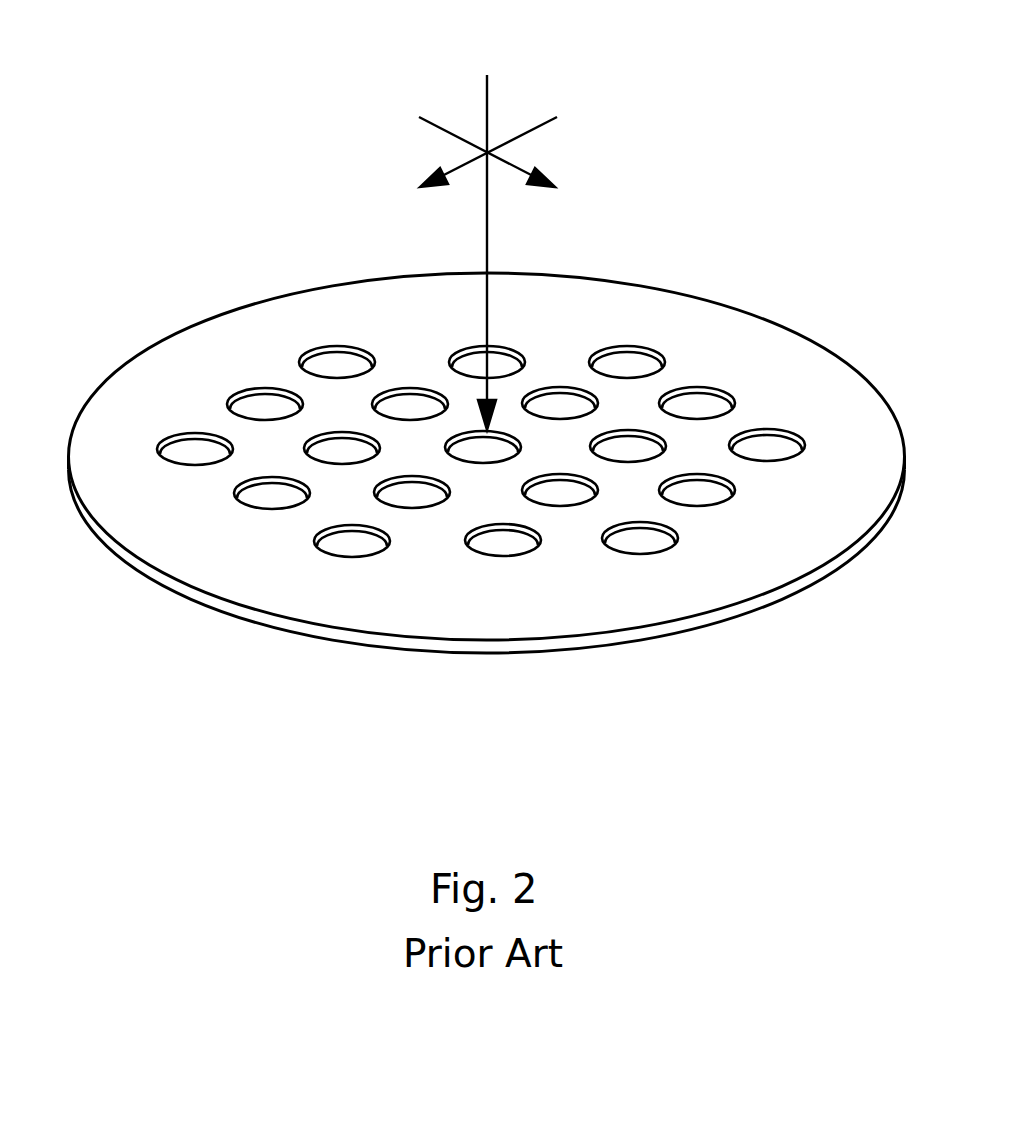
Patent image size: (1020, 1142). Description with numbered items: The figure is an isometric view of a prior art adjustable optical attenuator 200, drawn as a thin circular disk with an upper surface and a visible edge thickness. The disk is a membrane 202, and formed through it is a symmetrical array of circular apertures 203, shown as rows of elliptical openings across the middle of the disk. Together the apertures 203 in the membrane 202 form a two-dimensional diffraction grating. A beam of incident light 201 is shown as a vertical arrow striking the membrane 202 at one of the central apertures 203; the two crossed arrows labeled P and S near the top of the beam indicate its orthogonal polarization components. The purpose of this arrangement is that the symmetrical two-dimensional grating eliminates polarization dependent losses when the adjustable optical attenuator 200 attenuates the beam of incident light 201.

The adjustable optical attenuator 200 is at (483, 474).
The beam of incident light 201 is at (490, 100).
The membrane 202 is at (673, 293).
The circular apertures 203 is at (797, 432).